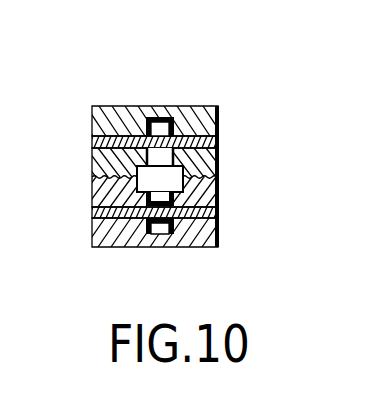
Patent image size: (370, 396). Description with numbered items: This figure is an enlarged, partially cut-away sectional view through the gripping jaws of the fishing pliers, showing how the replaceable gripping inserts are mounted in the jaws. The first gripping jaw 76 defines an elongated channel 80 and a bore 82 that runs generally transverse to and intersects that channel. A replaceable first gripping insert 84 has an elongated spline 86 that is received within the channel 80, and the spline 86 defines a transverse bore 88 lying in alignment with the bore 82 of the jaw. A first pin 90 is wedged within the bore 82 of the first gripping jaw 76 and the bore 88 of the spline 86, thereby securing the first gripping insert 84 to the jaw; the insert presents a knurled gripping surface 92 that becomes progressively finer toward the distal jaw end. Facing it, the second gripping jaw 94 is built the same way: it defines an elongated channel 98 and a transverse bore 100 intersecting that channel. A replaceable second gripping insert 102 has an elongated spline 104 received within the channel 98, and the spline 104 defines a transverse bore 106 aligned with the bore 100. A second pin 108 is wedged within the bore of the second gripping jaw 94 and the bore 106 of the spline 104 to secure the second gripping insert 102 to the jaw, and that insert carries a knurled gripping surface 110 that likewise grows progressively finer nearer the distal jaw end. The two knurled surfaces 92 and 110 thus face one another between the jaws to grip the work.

The first gripping jaw 76 is at (116, 106).
The elongated channel 80 is at (158, 118).
The elongated spline 86 is at (147, 118).
The traverse bore 88 is at (172, 118).
The bore 82 is at (220, 112).
The first pin 90 is at (220, 143).
The first gripping insert 84 is at (220, 160).
The knurled gripping surface 110 is at (98, 168).
The second gripping insert 102 is at (92, 188).
The knurled gripping surface 92 is at (220, 186).
The second pin 108 is at (220, 216).
The second gripping jaw 94 is at (108, 247).
The traverse bore 106 is at (122, 248).
The bore 100 is at (217, 248).
The elongated channel 98 is at (178, 248).
The elongated spline 104 is at (155, 234).